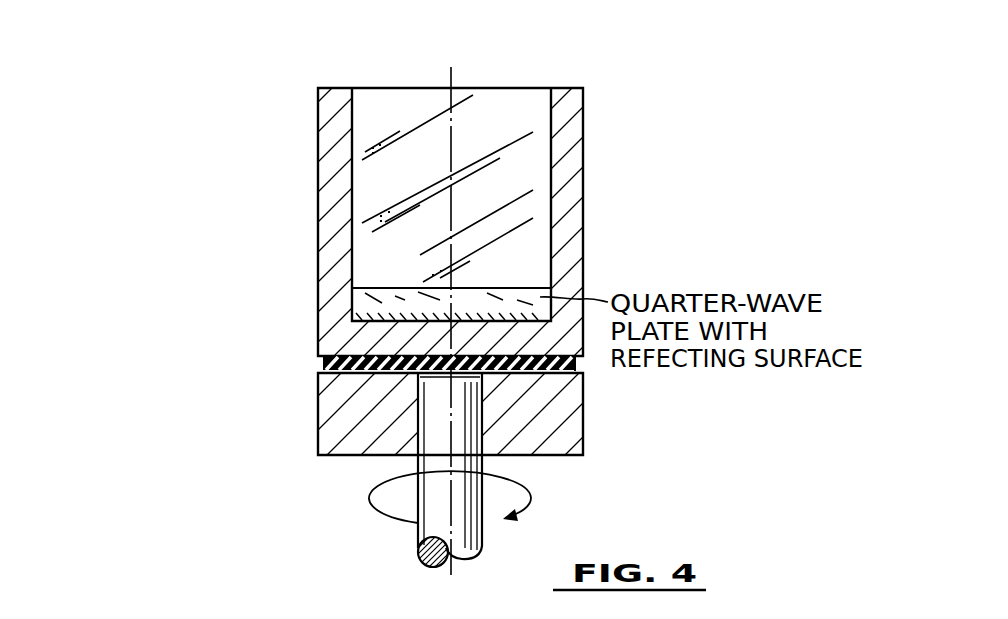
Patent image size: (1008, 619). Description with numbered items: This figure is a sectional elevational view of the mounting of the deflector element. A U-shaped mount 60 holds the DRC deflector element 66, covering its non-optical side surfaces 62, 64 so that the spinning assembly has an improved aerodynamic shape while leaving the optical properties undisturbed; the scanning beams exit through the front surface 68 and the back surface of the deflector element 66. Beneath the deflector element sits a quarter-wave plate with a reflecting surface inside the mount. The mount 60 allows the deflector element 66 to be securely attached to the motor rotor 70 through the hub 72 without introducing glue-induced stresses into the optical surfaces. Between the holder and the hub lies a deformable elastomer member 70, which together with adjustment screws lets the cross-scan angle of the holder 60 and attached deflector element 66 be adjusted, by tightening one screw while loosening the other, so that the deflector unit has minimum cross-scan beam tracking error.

The U-shaped mount 60 is at (352, 181).
The non-optical side surface 62 is at (345, 241).
The non-optical side surface 64 is at (577, 243).
The DRC deflector element 66 is at (535, 165).
The front surface 68 is at (535, 126).
The motor rotor / deformable elastomer member 70 is at (417, 536).
The hub 72 is at (572, 412).